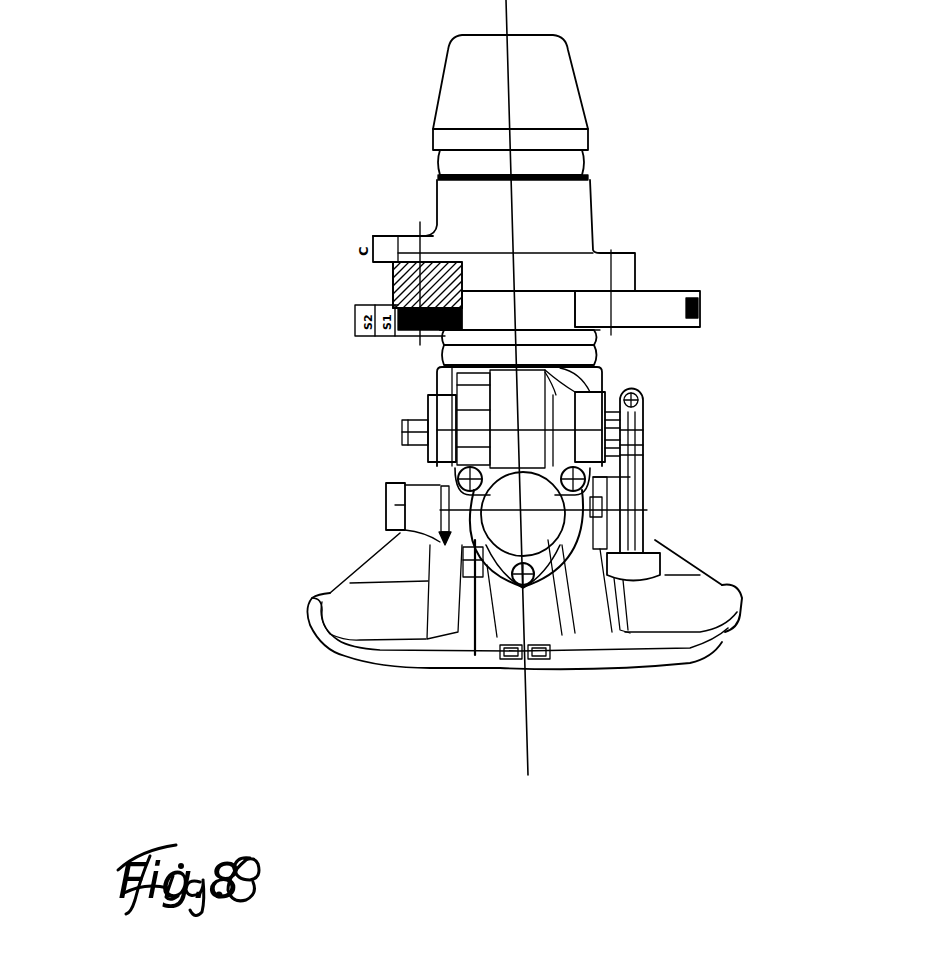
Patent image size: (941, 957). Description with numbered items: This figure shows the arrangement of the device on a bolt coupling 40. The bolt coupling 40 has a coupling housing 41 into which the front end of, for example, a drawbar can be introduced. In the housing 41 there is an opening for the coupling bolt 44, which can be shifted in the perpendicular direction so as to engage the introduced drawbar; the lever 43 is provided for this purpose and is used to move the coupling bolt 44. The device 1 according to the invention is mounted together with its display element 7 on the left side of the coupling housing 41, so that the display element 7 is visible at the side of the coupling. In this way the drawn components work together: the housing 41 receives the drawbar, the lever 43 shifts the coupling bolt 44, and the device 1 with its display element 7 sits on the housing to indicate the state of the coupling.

The device 1 is at (385, 513).
The display element 7 is at (385, 490).
The bolt coupling 40 is at (852, 247).
The coupling housing 41 is at (747, 735).
The lever 43 is at (745, 500).
The coupling bolt 44 is at (587, 818).